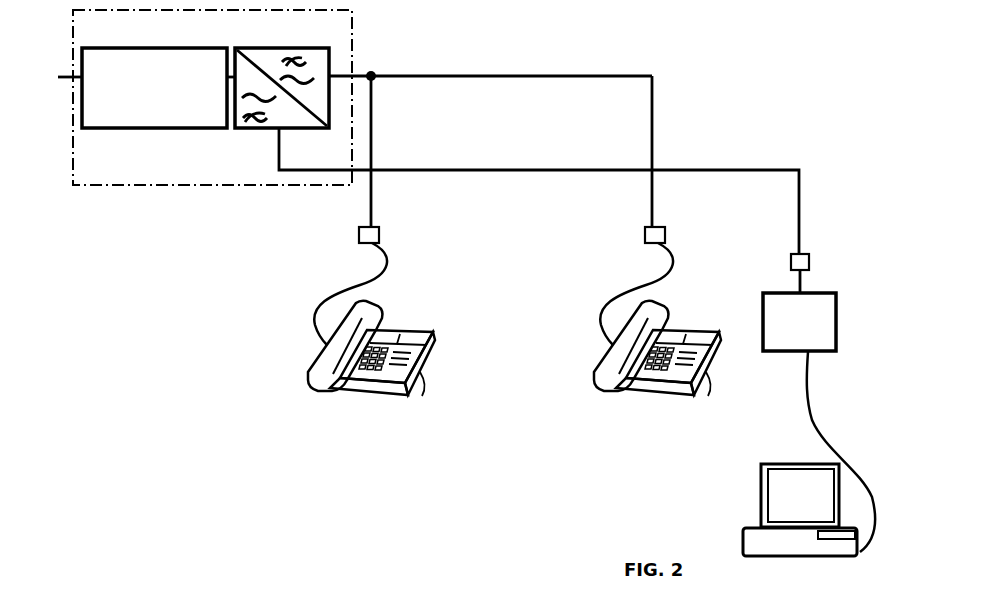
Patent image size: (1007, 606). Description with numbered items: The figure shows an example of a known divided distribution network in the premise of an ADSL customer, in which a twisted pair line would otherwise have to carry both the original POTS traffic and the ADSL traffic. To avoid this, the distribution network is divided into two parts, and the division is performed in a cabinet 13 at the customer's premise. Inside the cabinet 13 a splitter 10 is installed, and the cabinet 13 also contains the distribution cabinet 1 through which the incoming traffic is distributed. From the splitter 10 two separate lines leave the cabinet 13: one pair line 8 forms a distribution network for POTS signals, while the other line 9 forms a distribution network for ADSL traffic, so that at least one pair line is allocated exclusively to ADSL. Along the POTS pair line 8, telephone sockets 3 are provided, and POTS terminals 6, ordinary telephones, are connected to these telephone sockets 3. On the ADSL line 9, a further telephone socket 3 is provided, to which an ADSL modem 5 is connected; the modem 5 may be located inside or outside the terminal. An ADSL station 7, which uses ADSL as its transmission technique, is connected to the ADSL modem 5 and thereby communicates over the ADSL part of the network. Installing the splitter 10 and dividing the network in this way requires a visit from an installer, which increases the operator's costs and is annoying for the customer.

The distribution cabinet 1 is at (172, 122).
The splitter 10 is at (263, 45).
The cabinet 13 is at (353, 47).
The pair line 8 is at (483, 77).
The line 9 is at (433, 169).
The telephone socket 3 is at (377, 226).
The POTS terminal 6 is at (410, 390).
The ADSL modem 5 is at (763, 308).
The ADSL station 7 is at (787, 474).